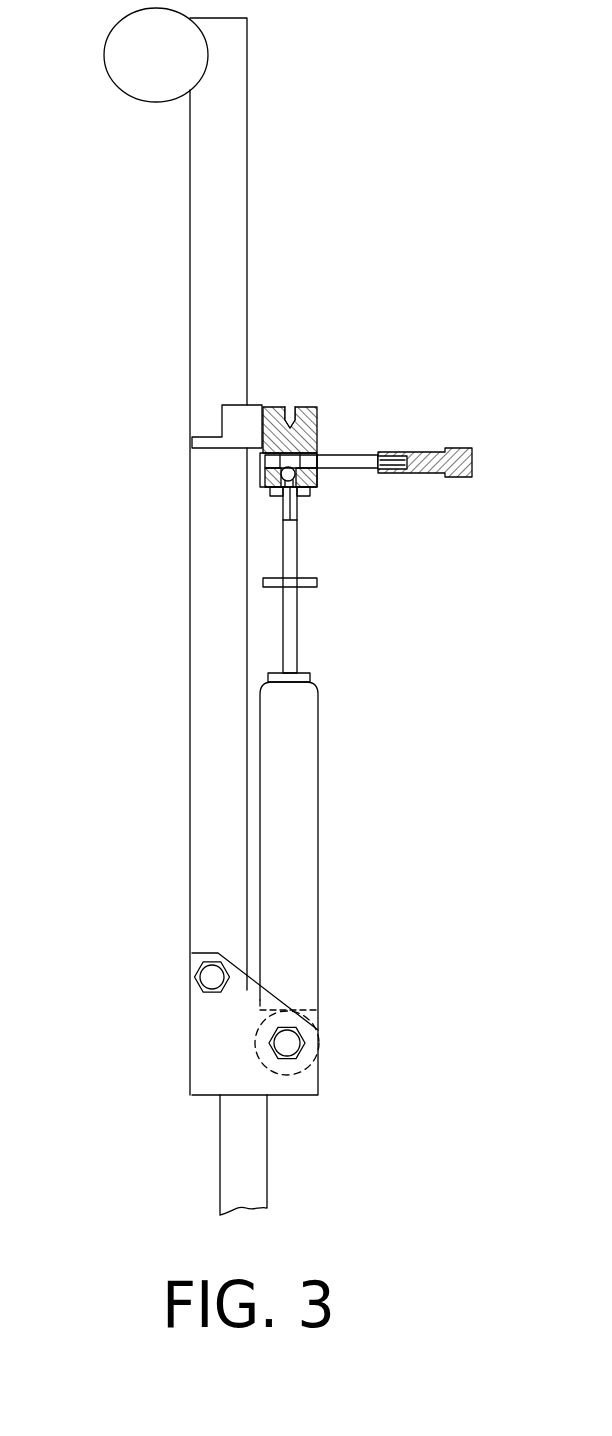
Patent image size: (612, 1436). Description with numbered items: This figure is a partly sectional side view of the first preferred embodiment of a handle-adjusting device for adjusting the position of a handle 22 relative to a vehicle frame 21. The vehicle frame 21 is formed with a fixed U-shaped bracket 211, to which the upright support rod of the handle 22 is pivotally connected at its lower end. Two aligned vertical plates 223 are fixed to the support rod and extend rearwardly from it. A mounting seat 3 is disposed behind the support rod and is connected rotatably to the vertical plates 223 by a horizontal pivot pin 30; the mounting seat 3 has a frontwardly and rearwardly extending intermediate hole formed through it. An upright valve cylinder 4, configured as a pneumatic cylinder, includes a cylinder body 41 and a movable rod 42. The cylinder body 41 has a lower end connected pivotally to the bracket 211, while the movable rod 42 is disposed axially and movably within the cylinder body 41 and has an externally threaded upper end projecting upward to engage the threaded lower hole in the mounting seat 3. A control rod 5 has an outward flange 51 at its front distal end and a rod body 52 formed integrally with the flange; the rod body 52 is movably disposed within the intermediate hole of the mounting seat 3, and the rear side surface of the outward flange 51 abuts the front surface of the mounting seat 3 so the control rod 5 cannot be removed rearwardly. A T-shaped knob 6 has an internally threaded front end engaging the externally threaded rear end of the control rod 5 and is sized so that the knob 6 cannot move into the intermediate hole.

The handle 22 is at (207, 320).
The vertical plates 223 is at (230, 412).
The mounting seat 3 is at (331, 373).
The horizontal pivot pin 30 is at (293, 408).
The control rod 5 is at (293, 495).
The outward flange 51 is at (260, 462).
The rod body 52 is at (345, 462).
The T-shaped knob 6 is at (430, 452).
The upright valve cylinder 4 is at (354, 758).
The cylinder body 41 is at (292, 808).
The movable rod 42 is at (288, 612).
The U-shaped bracket 211 is at (213, 1042).
The vehicle frame 21 is at (218, 1108).